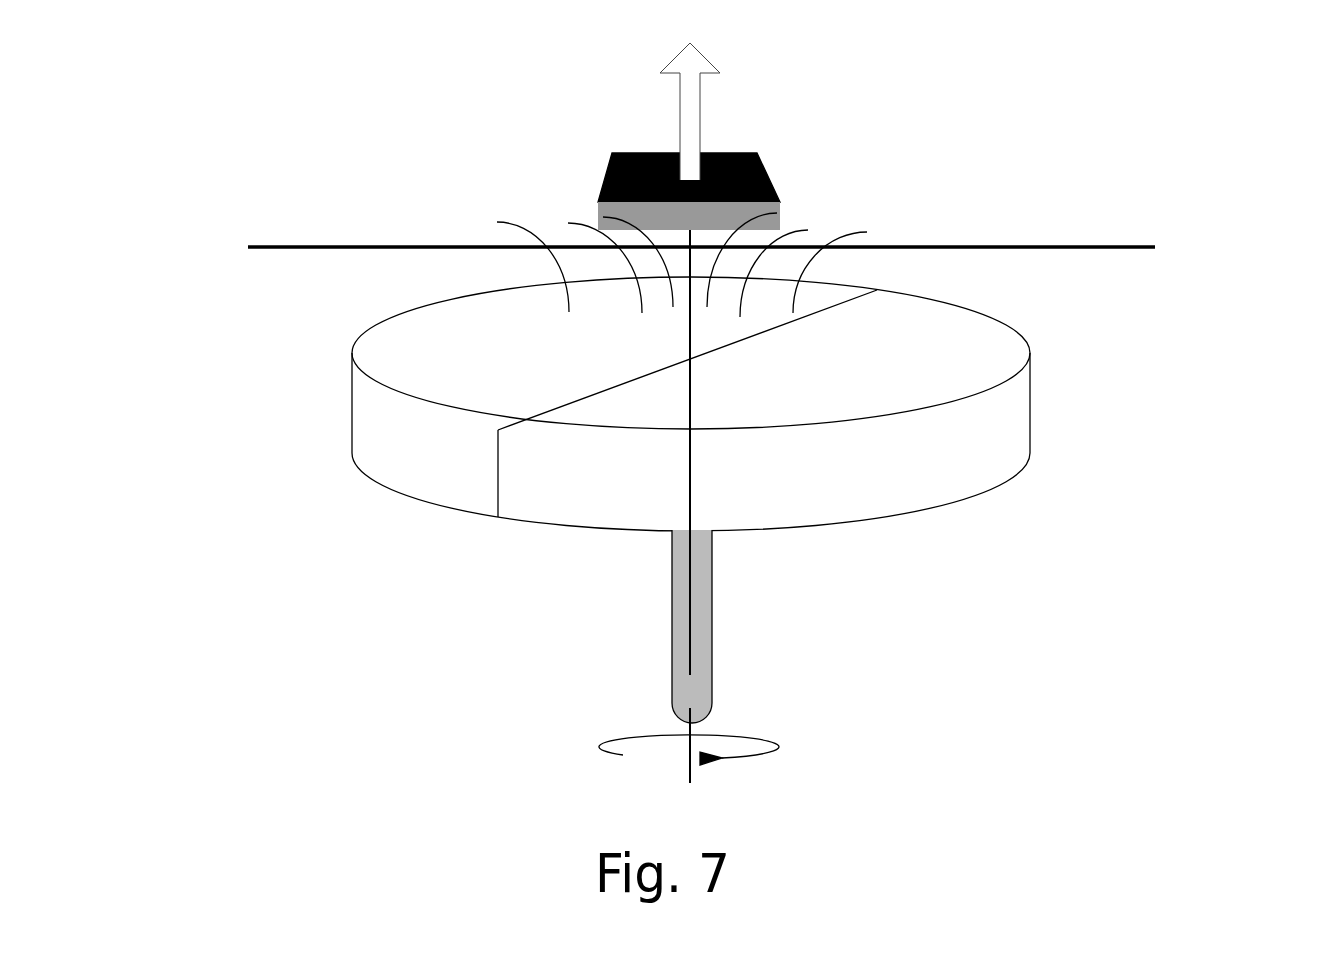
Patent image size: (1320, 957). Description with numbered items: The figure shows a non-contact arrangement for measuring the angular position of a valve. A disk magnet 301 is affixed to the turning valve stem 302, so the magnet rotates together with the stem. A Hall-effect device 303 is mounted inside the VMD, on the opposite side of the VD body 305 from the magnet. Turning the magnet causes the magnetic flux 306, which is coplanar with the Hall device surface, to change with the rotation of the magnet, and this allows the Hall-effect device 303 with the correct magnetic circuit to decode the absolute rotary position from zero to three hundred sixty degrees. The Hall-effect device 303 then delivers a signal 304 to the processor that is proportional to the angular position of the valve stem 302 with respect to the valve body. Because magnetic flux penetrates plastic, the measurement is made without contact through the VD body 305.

The disk magnet 301 is at (386, 496).
The valve stem 302 is at (660, 642).
The Hall-effect device 303 is at (586, 183).
The signal 304 is at (733, 61).
The VD body 305 is at (346, 239).
The magnetic flux 306 is at (598, 260).